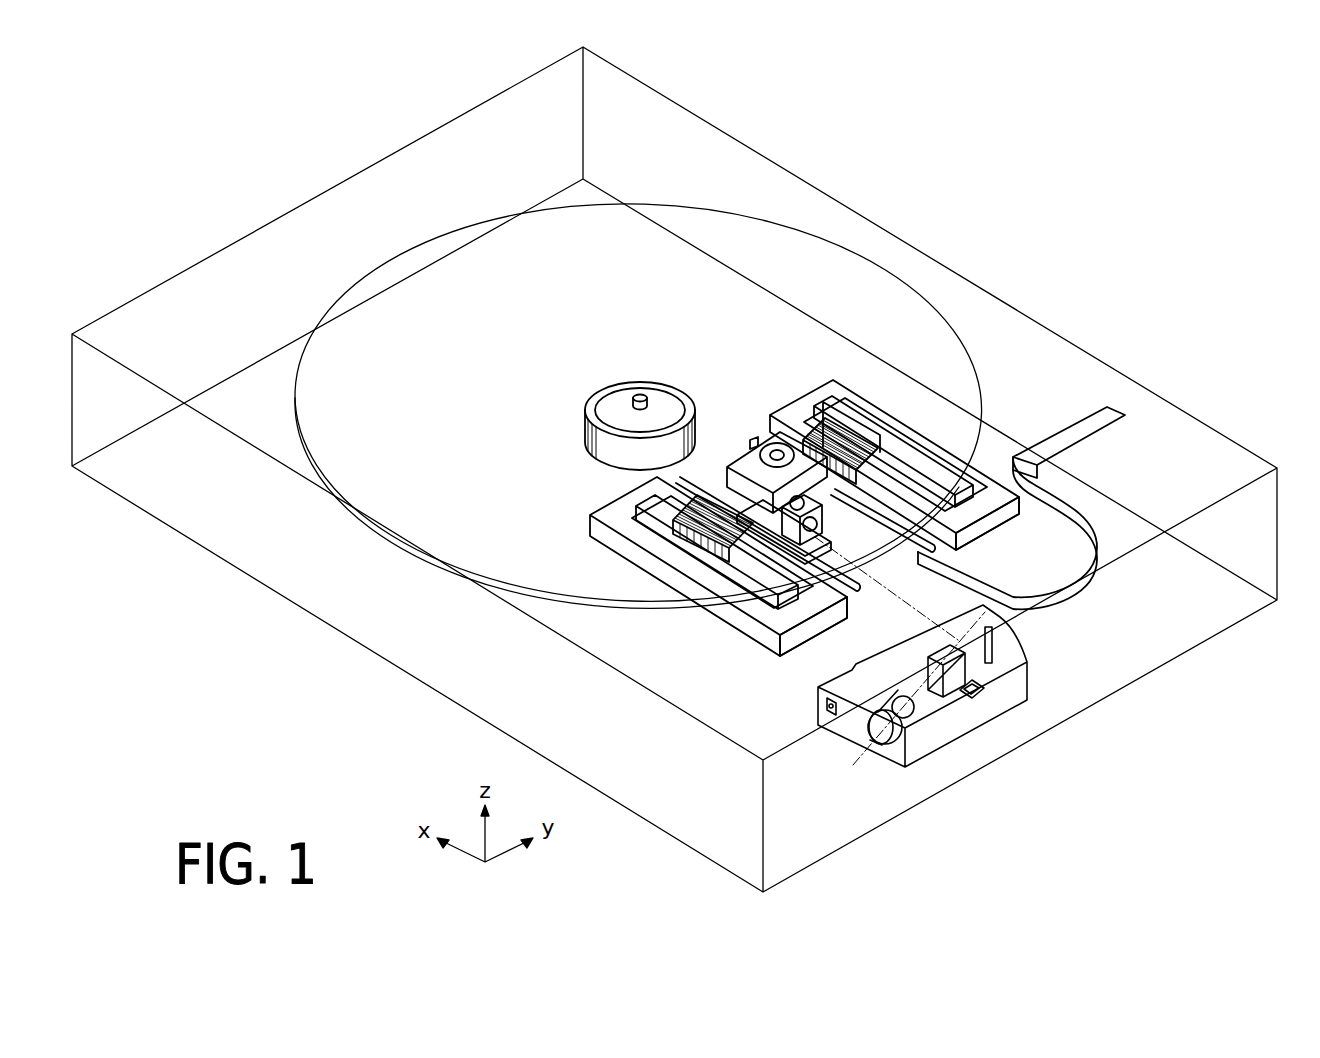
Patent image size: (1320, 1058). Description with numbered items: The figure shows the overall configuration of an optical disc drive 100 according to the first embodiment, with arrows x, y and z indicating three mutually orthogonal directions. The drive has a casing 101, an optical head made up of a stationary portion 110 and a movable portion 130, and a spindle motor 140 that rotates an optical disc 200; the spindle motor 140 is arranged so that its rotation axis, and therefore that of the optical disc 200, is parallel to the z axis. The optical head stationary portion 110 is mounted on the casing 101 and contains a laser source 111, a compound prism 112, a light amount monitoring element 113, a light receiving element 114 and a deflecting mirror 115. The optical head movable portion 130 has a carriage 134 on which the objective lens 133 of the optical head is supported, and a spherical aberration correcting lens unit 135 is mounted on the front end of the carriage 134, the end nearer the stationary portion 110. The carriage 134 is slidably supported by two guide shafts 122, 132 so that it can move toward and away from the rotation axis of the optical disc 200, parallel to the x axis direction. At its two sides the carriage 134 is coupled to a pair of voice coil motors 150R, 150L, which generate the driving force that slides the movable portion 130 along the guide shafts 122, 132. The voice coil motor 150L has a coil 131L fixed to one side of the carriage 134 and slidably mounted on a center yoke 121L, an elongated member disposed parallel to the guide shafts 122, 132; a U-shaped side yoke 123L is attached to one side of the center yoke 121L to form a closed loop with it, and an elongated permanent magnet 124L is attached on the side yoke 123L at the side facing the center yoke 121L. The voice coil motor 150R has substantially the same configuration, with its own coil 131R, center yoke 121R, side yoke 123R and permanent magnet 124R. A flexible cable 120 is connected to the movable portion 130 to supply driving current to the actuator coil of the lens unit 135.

The optical disc drive 100 is at (674, 469).
The casing 101 is at (752, 163).
The optical head stationary portion 110 is at (914, 710).
The laser source 111 is at (890, 747).
The compound prism 112 is at (967, 660).
The light amount monitoring element 113 is at (975, 693).
The light receiving element 114 is at (828, 707).
The deflecting mirror 115 is at (993, 650).
The flexible cable 120 is at (1090, 430).
The center yoke 121L is at (838, 612).
The center yoke 121R is at (977, 540).
The guide shaft 122 is at (935, 550).
The side yoke 123L is at (770, 632).
The side yoke 123R is at (973, 477).
The permanent magnet 124L is at (710, 548).
The permanent magnet 124R is at (903, 455).
The optical head movable portion 130 is at (817, 487).
The coil 131L is at (707, 560).
The coil 131R is at (840, 435).
The guide shaft 132 is at (861, 590).
The objective lens 133 is at (775, 452).
The carriage 134 is at (733, 460).
The spherical aberration correcting lens unit 135 is at (843, 532).
The spindle motor 140 is at (622, 393).
The voice coil motor 150L is at (702, 559).
The voice coil motor 150R is at (911, 440).
The optical disc 200 is at (878, 270).